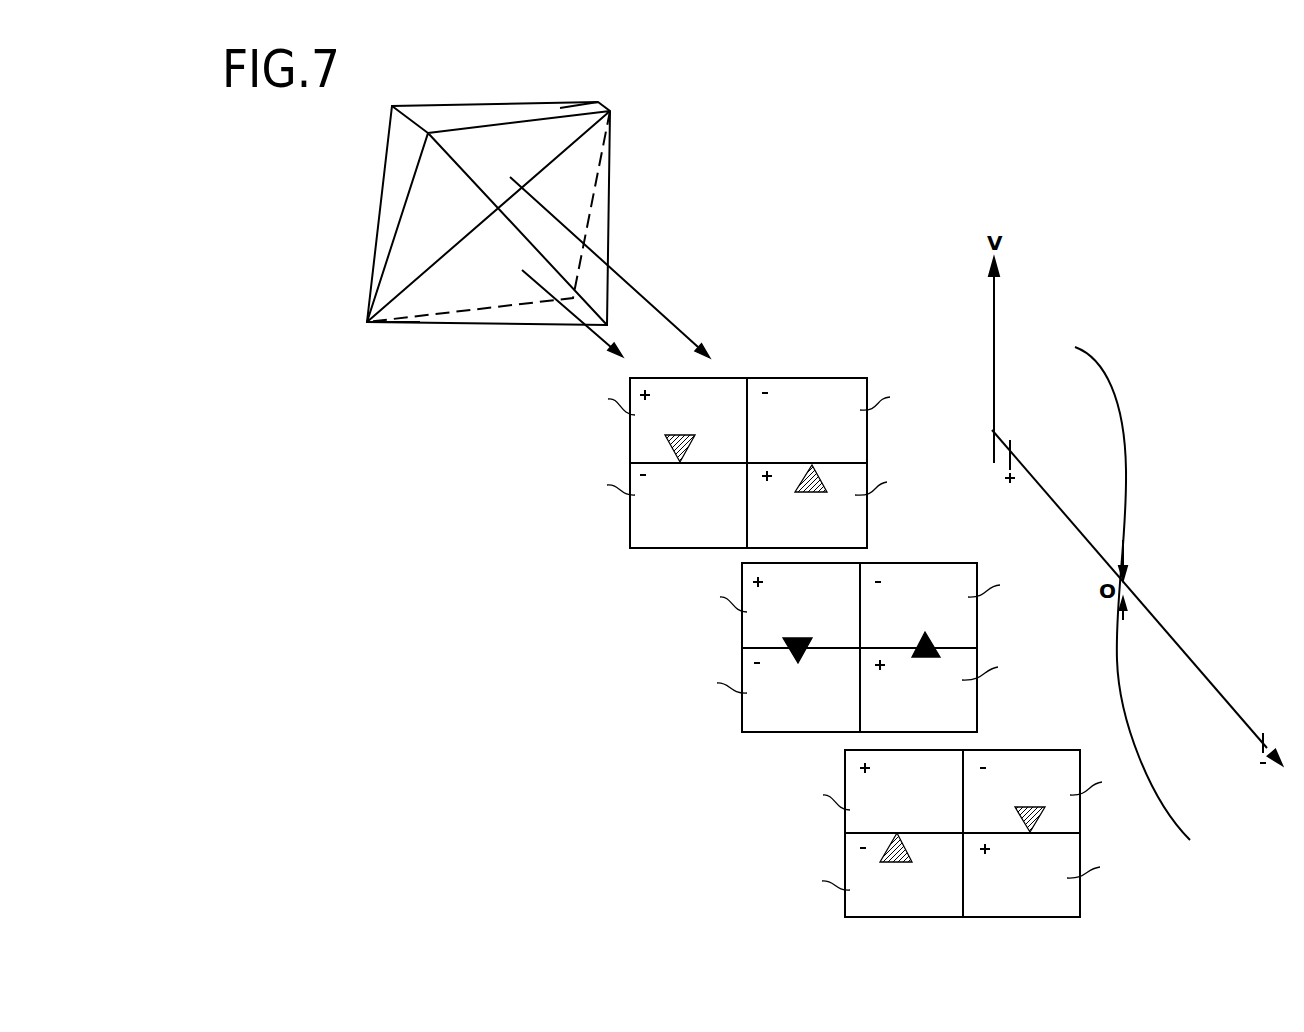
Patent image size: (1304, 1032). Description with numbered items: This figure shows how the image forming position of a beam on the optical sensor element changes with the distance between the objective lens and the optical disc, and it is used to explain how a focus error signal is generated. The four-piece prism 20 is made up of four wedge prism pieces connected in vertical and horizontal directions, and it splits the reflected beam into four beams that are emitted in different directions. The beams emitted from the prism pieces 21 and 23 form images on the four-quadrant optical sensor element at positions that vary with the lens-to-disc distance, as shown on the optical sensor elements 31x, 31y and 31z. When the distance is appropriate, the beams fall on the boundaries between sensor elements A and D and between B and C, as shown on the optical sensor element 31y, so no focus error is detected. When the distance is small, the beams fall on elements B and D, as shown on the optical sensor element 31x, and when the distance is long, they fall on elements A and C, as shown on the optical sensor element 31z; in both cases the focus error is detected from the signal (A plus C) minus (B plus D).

The four-piece prism 20 is at (672, 128).
The prism piece 21 is at (560, 108).
The prism piece 23 is at (410, 313).
The optical sensor element 31x is at (833, 378).
The optical sensor element 31y is at (948, 563).
The optical sensor element 31z is at (1007, 750).